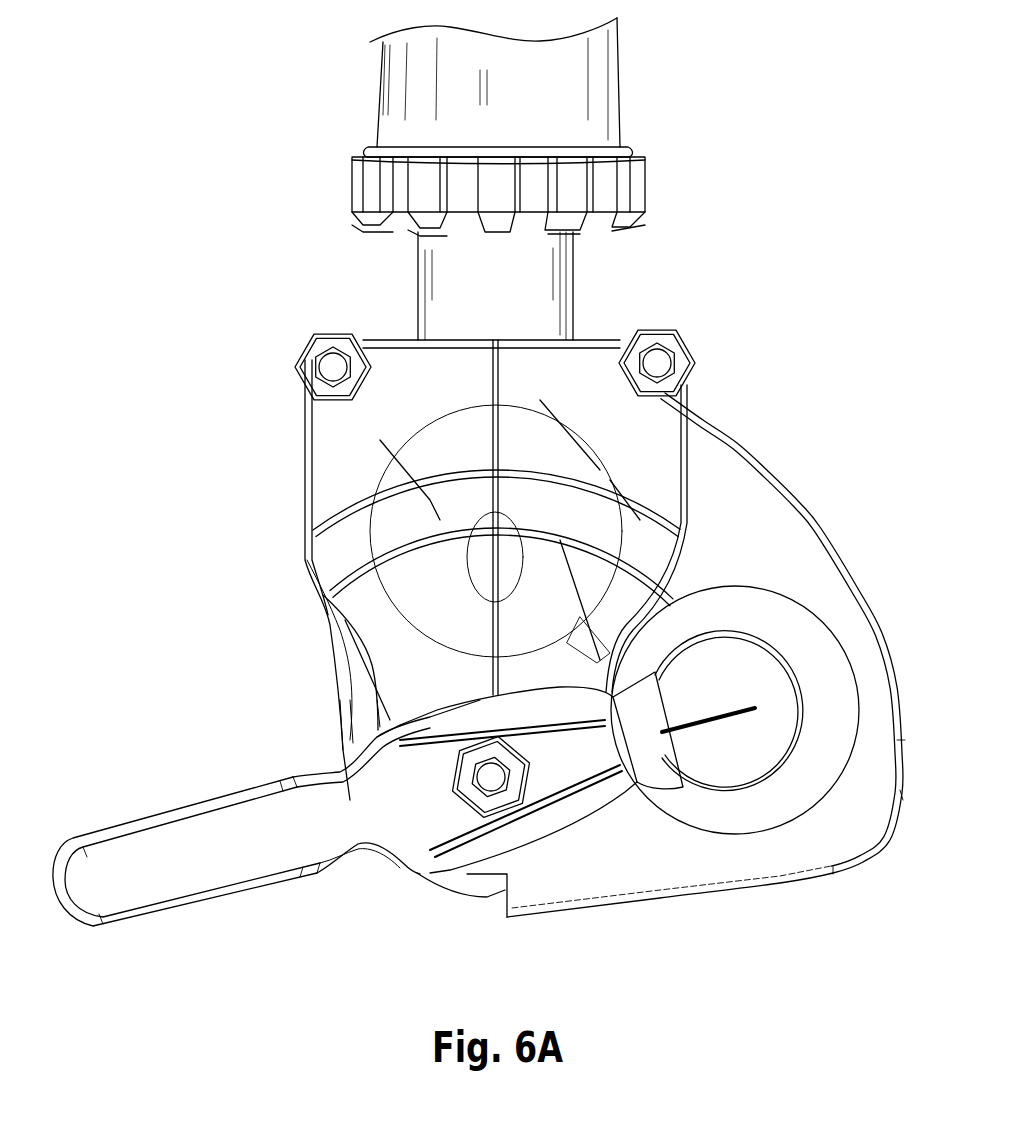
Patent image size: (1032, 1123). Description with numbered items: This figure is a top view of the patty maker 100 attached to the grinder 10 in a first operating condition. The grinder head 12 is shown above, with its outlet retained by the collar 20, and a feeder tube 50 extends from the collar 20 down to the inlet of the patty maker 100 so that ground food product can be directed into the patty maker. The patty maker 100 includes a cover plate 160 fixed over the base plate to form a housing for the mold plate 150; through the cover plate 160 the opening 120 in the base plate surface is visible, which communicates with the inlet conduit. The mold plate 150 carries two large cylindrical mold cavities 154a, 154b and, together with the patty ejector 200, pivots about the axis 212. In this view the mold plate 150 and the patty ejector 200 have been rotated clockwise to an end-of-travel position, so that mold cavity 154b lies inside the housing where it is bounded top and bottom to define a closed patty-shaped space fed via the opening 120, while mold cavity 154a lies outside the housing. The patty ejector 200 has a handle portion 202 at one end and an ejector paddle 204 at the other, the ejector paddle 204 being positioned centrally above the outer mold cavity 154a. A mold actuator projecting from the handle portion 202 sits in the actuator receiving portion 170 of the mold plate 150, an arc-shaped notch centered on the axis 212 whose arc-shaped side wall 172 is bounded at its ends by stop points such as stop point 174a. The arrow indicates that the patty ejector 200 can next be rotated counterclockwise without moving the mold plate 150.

The grinder 10 is at (338, 82).
The grinder head 12 is at (557, 107).
The collar 20 is at (627, 190).
The feeder tube 50 is at (532, 270).
The patty maker 100 is at (213, 407).
The opening 120 is at (487, 565).
The mold plate 150 is at (735, 497).
The mold cavity 154a is at (770, 613).
The mold cavity 154b is at (355, 628).
The cover plate 160 is at (648, 452).
The actuator receiving portion 170 is at (461, 905).
The arc-shaped side wall 172 is at (453, 873).
The stop point 174a is at (493, 915).
The patty ejector 200 is at (350, 813).
The handle portion 202 is at (175, 868).
The ejector paddle 204 is at (752, 752).
The axis 212 is at (530, 790).